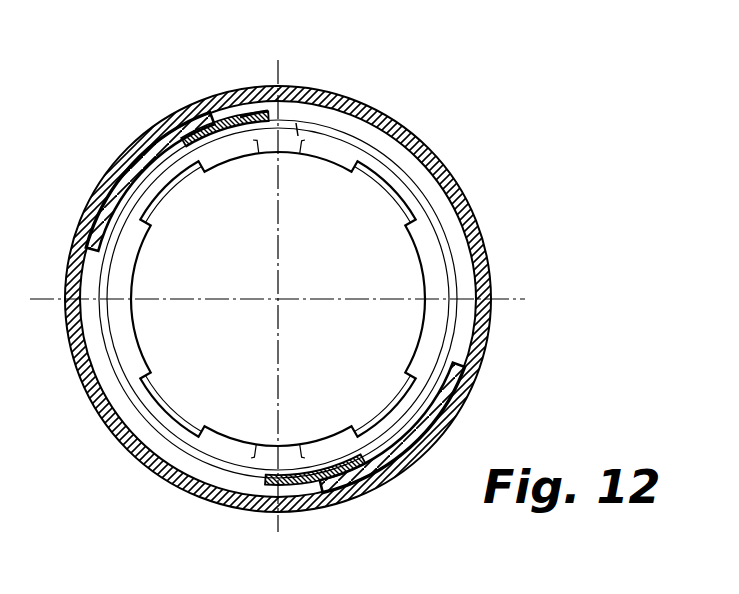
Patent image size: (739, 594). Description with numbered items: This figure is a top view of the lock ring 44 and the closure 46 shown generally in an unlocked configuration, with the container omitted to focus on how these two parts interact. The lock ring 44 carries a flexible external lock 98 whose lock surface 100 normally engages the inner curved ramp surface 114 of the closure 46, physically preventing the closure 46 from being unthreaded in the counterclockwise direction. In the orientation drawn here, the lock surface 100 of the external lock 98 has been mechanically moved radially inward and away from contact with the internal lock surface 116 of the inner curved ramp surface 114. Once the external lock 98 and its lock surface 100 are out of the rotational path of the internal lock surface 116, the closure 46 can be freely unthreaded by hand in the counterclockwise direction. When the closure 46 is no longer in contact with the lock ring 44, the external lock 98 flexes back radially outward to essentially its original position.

The lock ring 44 is at (141, 170).
The closure 46 is at (353, 98).
The flexible external lock 98 is at (199, 109).
The lock surface 100 is at (284, 118).
The inner curved ramp surface 114 is at (300, 120).
The internal lock surface 116 is at (263, 105).